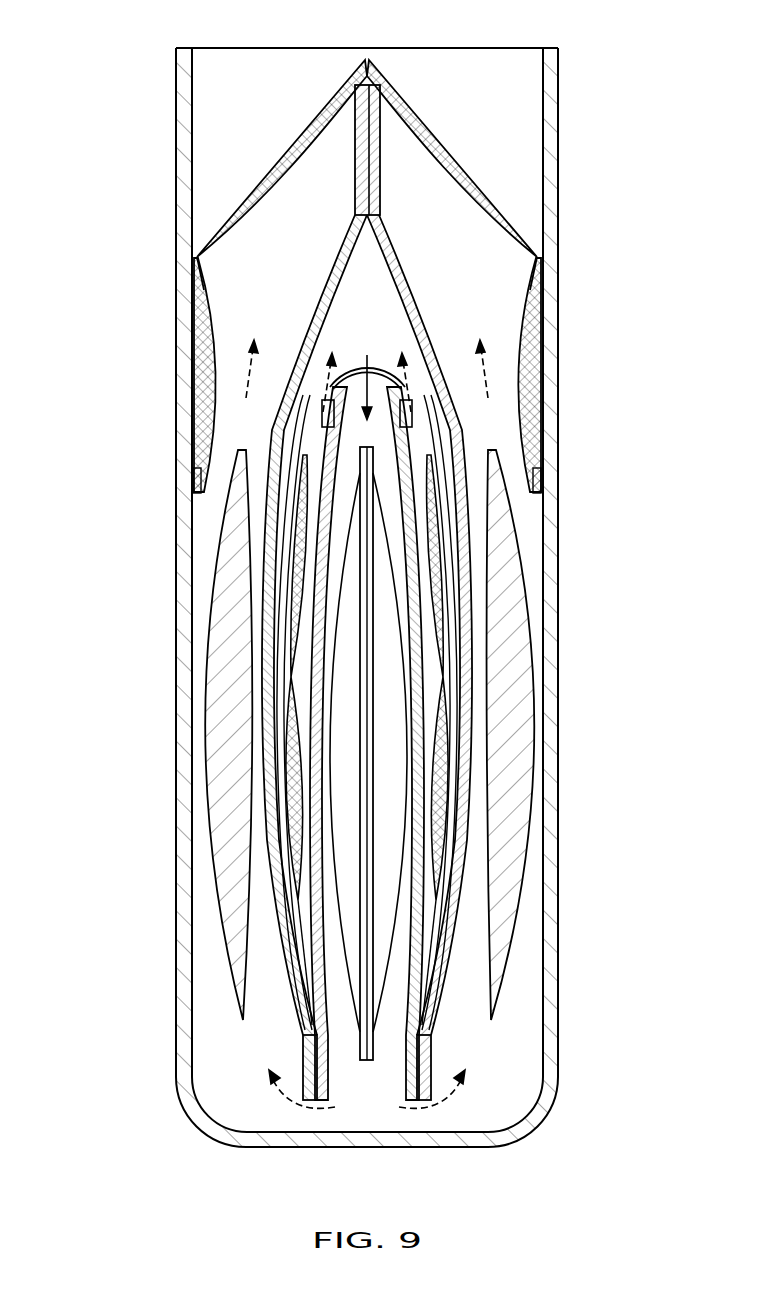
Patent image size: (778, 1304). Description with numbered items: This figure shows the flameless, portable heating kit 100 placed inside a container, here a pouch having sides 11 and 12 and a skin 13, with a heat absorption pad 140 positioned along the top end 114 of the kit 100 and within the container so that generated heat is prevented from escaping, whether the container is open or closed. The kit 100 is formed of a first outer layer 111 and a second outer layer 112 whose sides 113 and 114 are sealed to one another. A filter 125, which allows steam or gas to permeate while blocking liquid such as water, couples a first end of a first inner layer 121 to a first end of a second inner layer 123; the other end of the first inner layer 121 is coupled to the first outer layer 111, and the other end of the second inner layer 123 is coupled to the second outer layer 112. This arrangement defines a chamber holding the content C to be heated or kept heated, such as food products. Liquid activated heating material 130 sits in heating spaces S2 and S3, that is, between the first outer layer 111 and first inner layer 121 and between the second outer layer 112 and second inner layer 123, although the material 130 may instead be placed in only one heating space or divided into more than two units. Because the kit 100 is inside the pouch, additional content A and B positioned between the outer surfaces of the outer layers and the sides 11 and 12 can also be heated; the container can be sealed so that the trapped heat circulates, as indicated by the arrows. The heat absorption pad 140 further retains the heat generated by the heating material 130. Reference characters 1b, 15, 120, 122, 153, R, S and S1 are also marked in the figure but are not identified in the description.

The gas burner assembly 1b is at (594, 95).
The side 11 is at (188, 208).
The side 12 is at (552, 374).
The skin 13 is at (236, 62).
The housing bottom wall 15 is at (366, 1098).
The flameless portable heating kit 100 is at (420, 266).
The heat absorption pad 140 is at (437, 123).
The side 113 is at (377, 200).
The top end 114 is at (372, 138).
The first outer layer 111 is at (343, 263).
The second outer layer 112 is at (411, 302).
The inner cap assembly 120 is at (122, 328).
The cap top 122 is at (393, 393).
The filter 125 is at (330, 405).
The first inner layer 121 is at (318, 443).
The second inner layer 123 is at (422, 497).
The liquid activated heating material 130 is at (288, 620).
The retaining bracket 153 is at (196, 488).
The side recess seal R is at (531, 341).
The content A is at (215, 725).
The content B is at (515, 725).
The content C is at (390, 830).
The surfaces S is at (115, 925).
The first surface S1 is at (343, 1028).
The heating space S2 is at (300, 930).
The heating space S3 is at (430, 940).